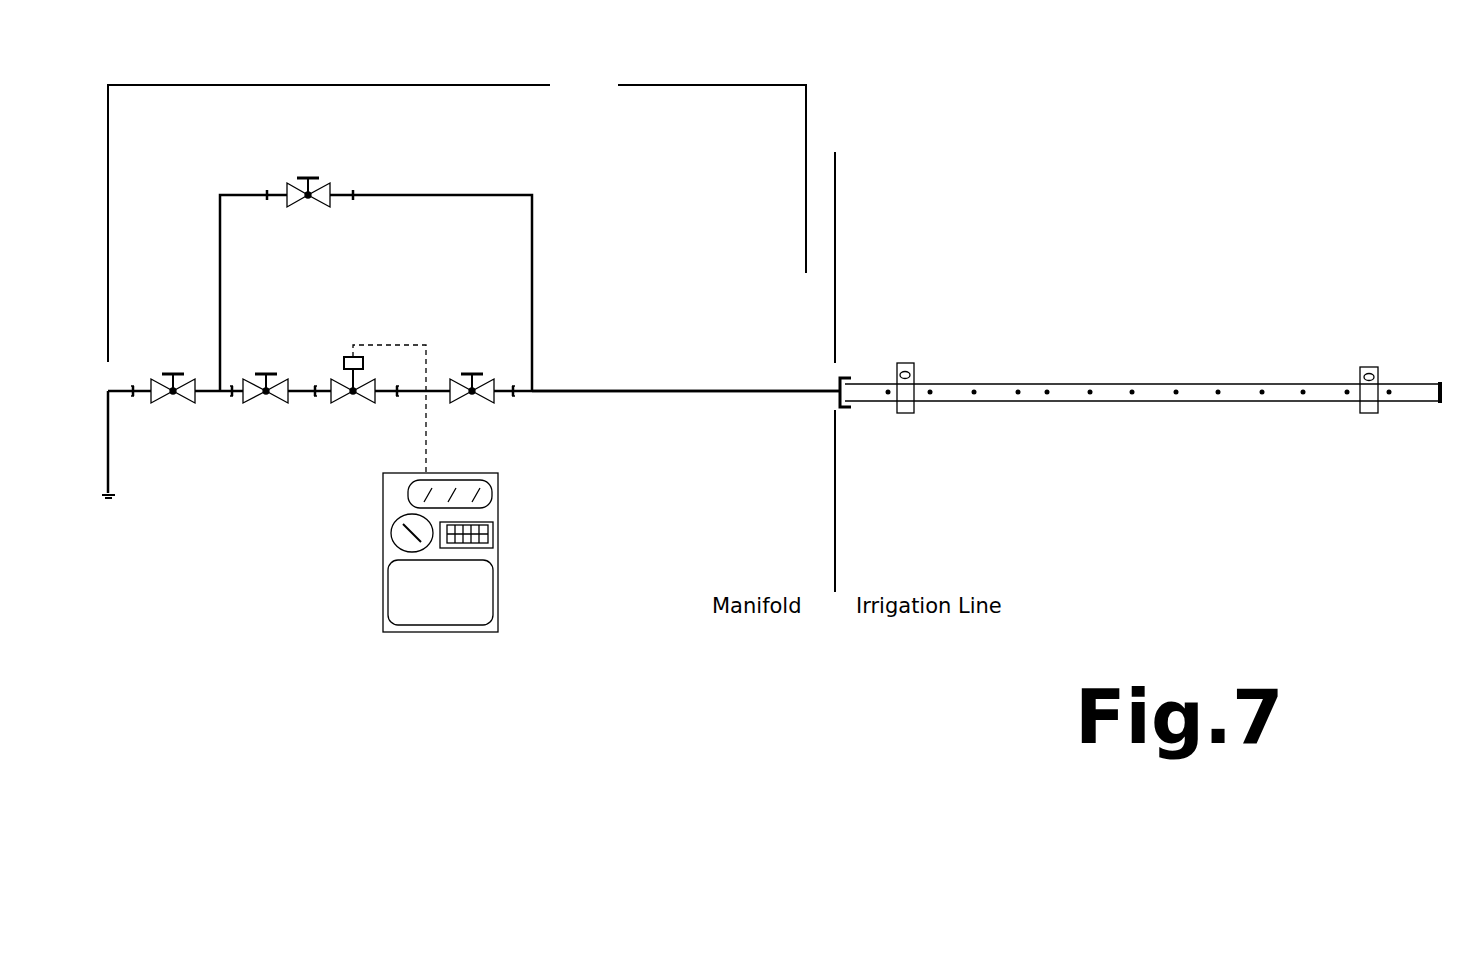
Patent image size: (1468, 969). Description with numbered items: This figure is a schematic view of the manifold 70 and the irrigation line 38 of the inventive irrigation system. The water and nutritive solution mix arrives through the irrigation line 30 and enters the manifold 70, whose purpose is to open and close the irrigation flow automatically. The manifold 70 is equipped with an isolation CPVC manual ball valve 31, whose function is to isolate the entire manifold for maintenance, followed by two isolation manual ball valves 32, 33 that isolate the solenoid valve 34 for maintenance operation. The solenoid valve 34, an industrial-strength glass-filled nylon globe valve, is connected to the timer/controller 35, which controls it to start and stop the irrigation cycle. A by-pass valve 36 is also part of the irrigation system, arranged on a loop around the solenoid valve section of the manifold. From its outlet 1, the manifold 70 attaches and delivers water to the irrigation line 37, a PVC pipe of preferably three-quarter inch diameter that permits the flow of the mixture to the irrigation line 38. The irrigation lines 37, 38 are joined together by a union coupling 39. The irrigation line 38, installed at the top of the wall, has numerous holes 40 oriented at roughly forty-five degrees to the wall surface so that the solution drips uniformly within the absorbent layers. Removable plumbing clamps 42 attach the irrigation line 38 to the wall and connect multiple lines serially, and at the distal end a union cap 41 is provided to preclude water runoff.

The manifold outlet 1 is at (516, 398).
The irrigation line 30 is at (118, 506).
The isolation CPVC manual ball valve 31 is at (173, 370).
The isolation CPVC manual ball valve 32 is at (262, 367).
The isolation CPVC manual ball valve 33 is at (468, 370).
The solenoid valve 34 is at (357, 397).
The timer/controller 35 is at (503, 552).
The by-pass valve 36 is at (311, 172).
The irrigation line 37 is at (661, 383).
The irrigation line 38 is at (1005, 380).
The union coupling 39 is at (848, 372).
The holes 40 is at (1260, 392).
The union cap 41 is at (1433, 379).
The pipe clamp 42 is at (920, 415).
The manifold 70 is at (457, 218).